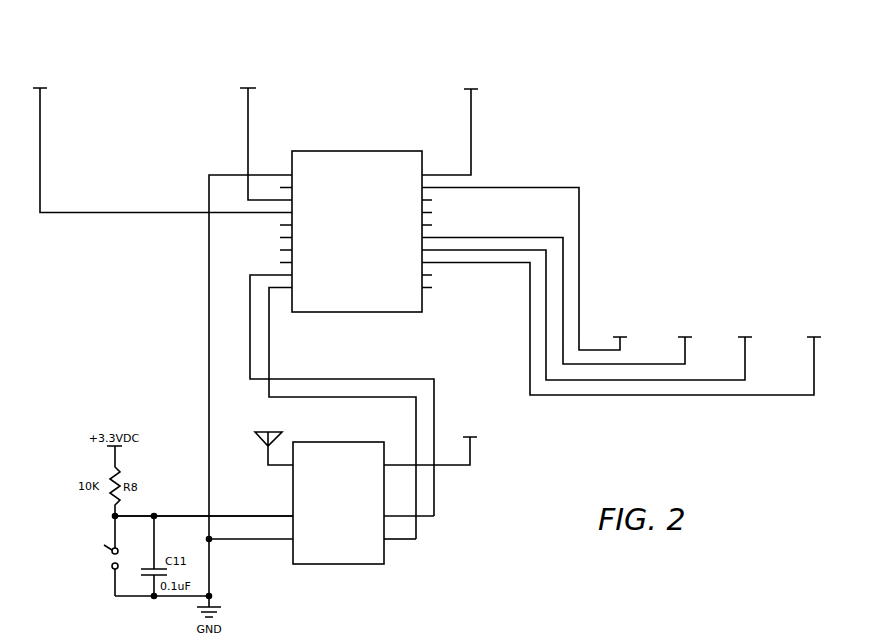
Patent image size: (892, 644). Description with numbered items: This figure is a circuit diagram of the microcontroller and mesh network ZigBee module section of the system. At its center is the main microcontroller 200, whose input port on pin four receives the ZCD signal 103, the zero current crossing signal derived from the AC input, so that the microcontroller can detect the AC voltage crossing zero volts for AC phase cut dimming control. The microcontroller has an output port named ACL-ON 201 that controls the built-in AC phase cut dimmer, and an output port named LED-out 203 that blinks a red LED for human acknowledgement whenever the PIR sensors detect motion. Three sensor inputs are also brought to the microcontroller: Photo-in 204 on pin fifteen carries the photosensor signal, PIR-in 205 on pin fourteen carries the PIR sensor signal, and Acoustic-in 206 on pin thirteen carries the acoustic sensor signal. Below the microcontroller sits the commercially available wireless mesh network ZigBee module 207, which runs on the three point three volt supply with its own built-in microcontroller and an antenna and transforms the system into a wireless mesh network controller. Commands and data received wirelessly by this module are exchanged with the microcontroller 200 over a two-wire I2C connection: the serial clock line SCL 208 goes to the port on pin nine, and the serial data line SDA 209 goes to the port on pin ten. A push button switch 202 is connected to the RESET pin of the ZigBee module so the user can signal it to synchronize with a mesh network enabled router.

The ZCD signal 103 is at (43, 66).
The microcontroller U2 200 is at (355, 133).
The ACL-ON output port 201 is at (248, 66).
The push button switch SW1 202 is at (92, 580).
The LED-out output port 203 is at (619, 320).
The Photo-in input port 204 is at (681, 320).
The PIR-in input port 205 is at (742, 320).
The Acoustic-in input port 206 is at (813, 320).
The wireless ZigBee module U3 207 is at (347, 433).
The serial clock line SCL 208 is at (438, 499).
The serial data SDA 209 is at (422, 536).